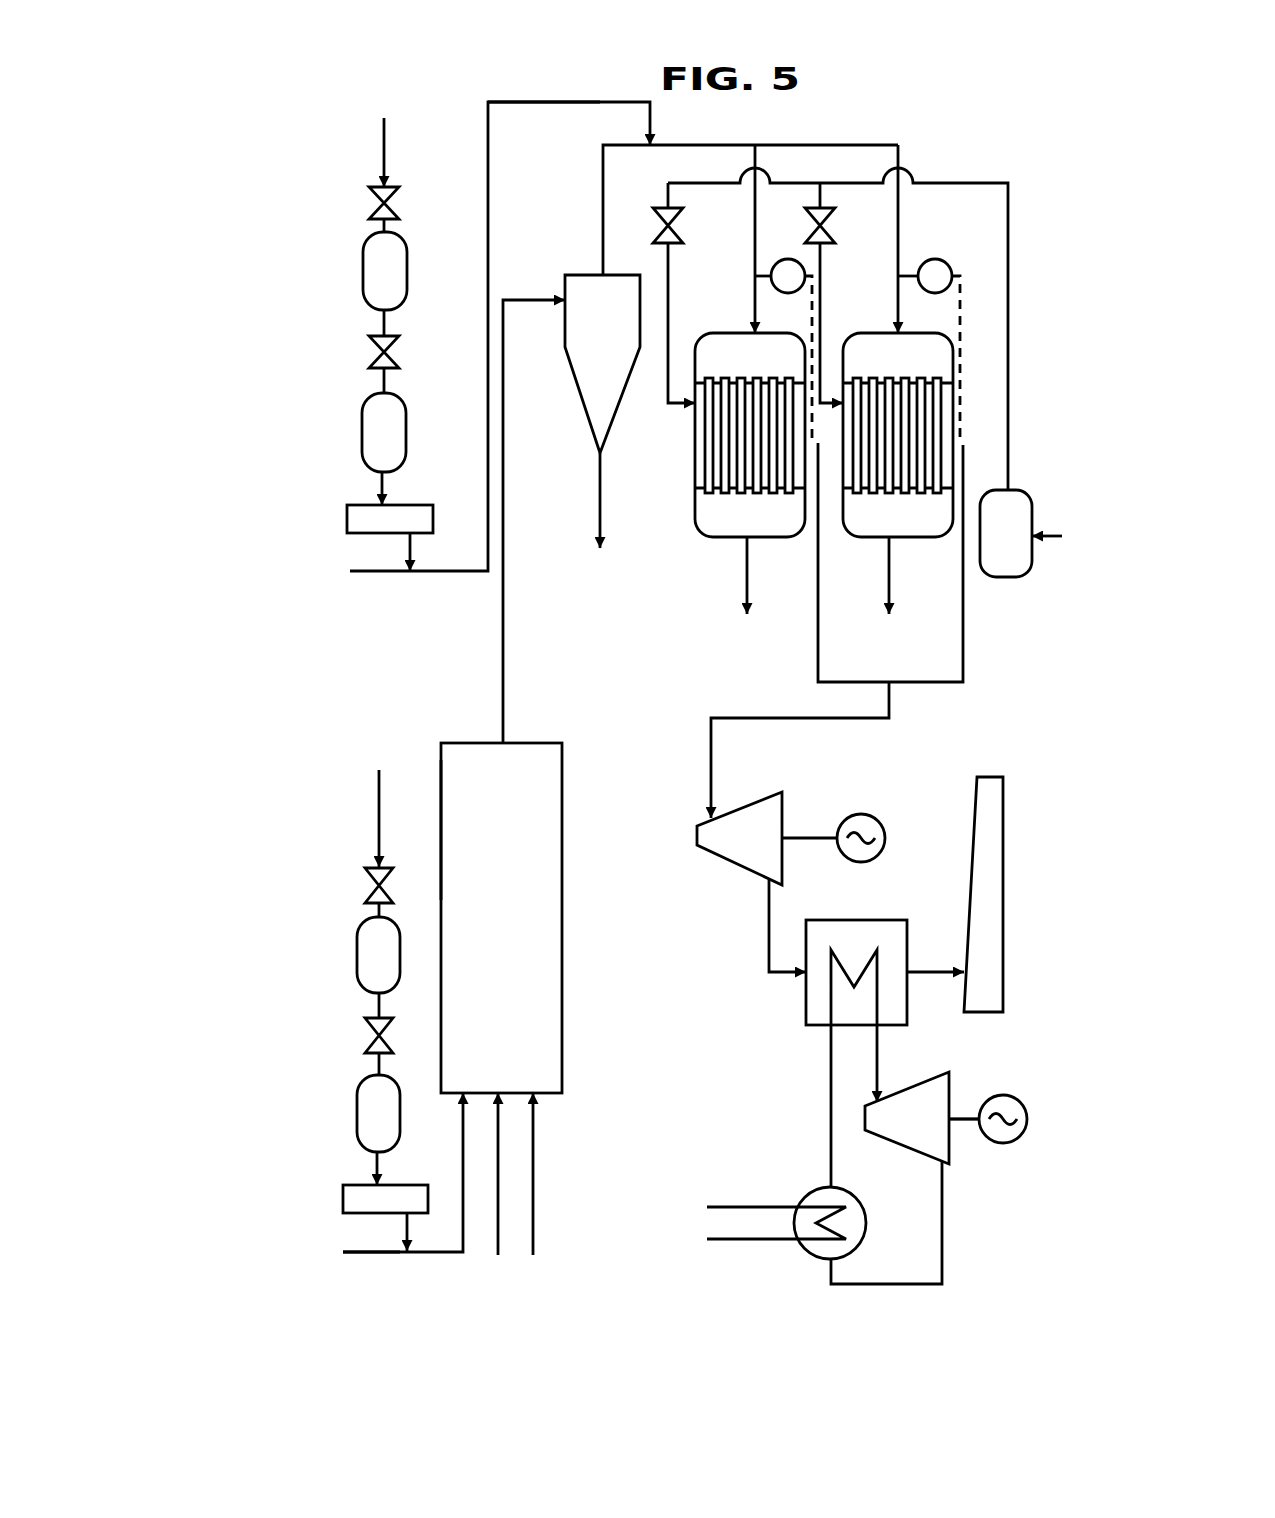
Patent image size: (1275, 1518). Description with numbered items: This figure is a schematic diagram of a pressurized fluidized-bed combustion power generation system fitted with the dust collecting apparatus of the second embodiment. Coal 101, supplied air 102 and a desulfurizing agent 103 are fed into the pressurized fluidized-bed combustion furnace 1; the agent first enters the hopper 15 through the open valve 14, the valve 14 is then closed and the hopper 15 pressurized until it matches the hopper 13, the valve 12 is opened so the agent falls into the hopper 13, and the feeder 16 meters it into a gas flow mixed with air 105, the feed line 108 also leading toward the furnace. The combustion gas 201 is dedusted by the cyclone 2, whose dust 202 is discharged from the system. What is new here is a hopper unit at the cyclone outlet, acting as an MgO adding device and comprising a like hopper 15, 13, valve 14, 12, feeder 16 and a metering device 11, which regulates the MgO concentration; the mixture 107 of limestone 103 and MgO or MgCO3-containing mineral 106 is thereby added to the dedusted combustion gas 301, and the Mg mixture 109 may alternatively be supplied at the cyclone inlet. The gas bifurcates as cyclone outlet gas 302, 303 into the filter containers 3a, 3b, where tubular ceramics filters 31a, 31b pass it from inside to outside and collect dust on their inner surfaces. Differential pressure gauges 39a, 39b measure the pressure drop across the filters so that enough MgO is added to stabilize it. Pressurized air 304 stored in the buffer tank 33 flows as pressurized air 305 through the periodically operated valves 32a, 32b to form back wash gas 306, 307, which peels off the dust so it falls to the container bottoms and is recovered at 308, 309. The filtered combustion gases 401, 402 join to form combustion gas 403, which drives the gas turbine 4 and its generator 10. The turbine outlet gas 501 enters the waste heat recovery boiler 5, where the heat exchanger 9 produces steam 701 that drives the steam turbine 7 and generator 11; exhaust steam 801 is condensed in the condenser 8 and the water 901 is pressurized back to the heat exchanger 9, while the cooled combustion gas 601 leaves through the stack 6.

The pressurized fluidized-bed combustion furnace 1 is at (562, 1057).
The cyclone 2 is at (563, 276).
The filter container 3a is at (735, 518).
The filter container 3b is at (920, 525).
The gas turbine 4 is at (735, 860).
The waste heat recovery boiler 5 is at (860, 920).
The stack 6 is at (1004, 838).
The steam turbine 7 is at (915, 1084).
The condenser 8 is at (804, 1199).
The heat exchanger 9 is at (831, 982).
The generator 10 is at (865, 813).
The generator 11 is at (322, 167).
The valve 12 is at (370, 356).
The hopper 13 is at (362, 437).
The valve 14 is at (372, 188).
The hopper 15 is at (363, 272).
The feeder 16 is at (347, 515).
The ceramics filters 31a is at (712, 482).
The ceramics filters 31b is at (870, 483).
The valve 32a is at (665, 208).
The valve 32b is at (829, 212).
The buffer tank 33 is at (1015, 490).
The differential pressure gauge 39a is at (782, 258).
The differential pressure gauge 39b is at (927, 258).
The coal 101 is at (535, 1232).
The supplied air 102 is at (500, 1250).
The desulfurizing agent 103 is at (367, 788).
The air 105 is at (364, 1255).
The MgO or MgCO3-containing mineral 106 is at (420, 782).
The mixture of limestone and MgO-containing mineral 107 is at (463, 597).
The feed line 108 is at (370, 572).
The Mg mixture 109 is at (592, 103).
The combustion gas 201 is at (503, 682).
The dust 202 is at (600, 472).
The combustion gas 301 is at (603, 186).
The cyclone outlet gas 302 is at (757, 153).
The cyclone outlet gas 303 is at (901, 164).
The pressurized air 304 is at (1050, 546).
The pressurized air from buffer tank 305 is at (1008, 232).
The back wash gas 306 is at (663, 375).
The back wash gas 307 is at (820, 352).
The recovered dust 308 is at (752, 585).
The recovered dust 309 is at (892, 595).
The combustion gas 401 is at (818, 662).
The combustion gas 402 is at (963, 648).
The combustion gas 403 is at (711, 760).
The combustion gas 501 is at (767, 942).
The combustion gas 601 is at (930, 972).
The steam 701 is at (874, 1062).
The steam 801 is at (889, 1286).
The water 901 is at (831, 1126).